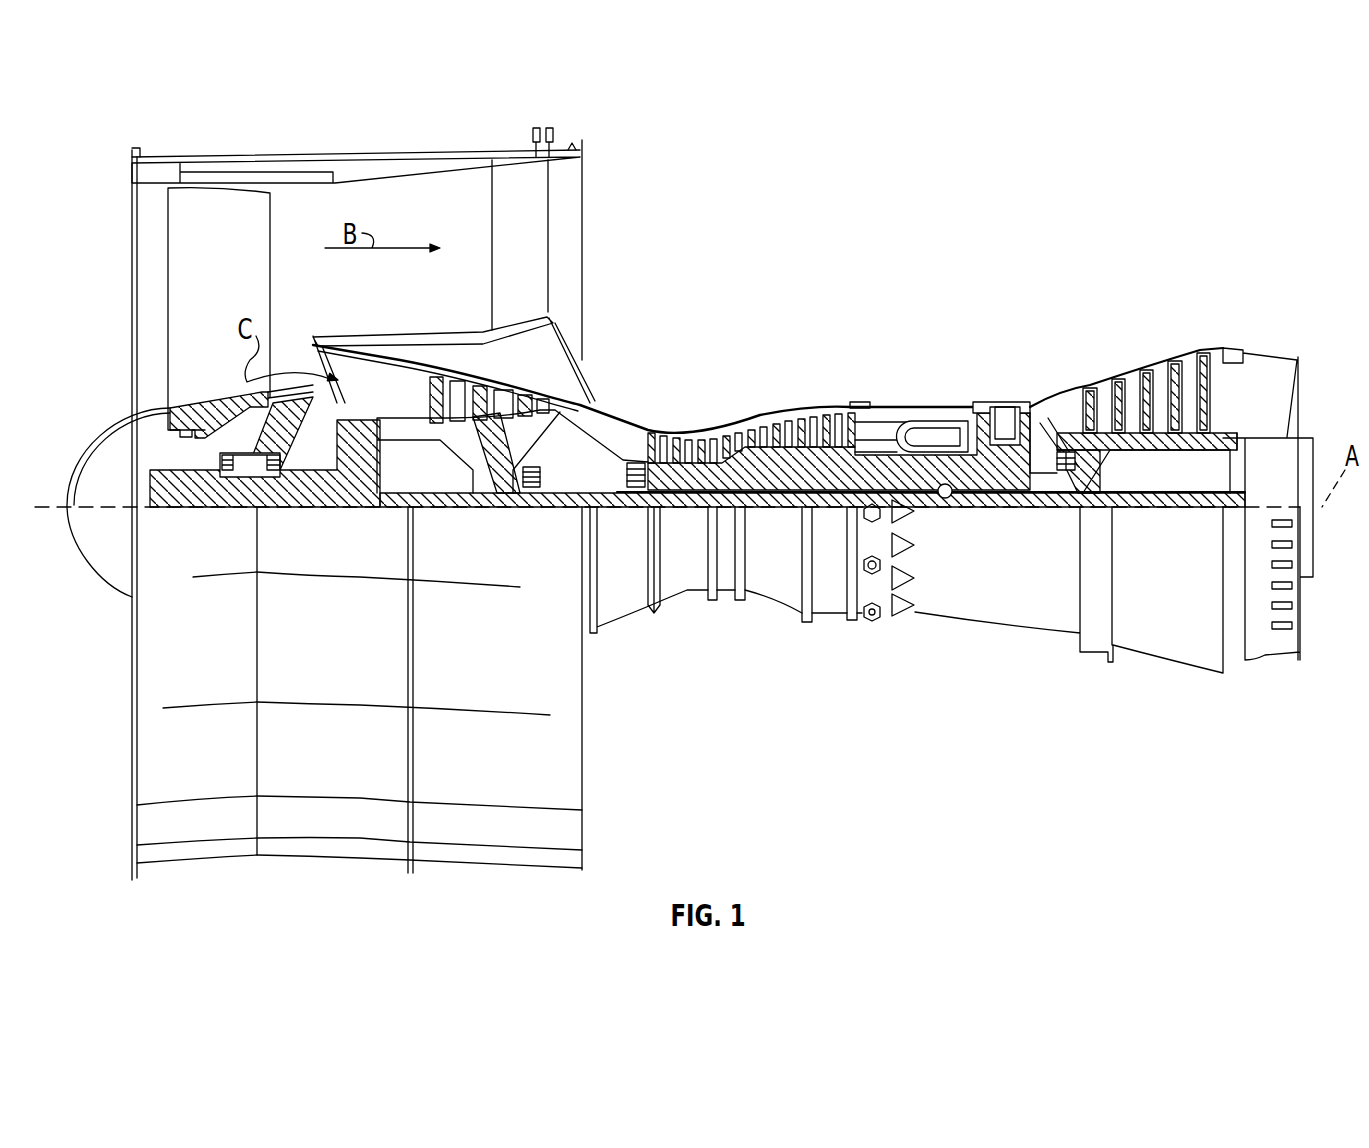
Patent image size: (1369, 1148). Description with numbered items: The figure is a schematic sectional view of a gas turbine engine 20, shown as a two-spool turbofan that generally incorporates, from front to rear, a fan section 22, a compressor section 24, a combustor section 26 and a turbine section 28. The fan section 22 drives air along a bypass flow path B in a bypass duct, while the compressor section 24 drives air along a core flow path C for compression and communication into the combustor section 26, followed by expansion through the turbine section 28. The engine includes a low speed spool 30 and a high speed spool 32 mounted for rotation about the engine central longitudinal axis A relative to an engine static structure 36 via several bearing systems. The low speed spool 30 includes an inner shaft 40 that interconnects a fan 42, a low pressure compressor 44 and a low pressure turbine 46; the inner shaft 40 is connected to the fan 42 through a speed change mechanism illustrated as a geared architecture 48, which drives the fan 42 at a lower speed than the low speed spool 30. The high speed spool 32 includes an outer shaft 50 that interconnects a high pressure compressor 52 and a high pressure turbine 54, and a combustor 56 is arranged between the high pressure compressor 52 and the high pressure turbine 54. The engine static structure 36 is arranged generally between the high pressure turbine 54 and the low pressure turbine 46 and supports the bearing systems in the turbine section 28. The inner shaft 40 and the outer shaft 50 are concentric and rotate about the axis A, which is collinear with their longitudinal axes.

The gas turbine engine 20 is at (1180, 165).
The fan section 22 is at (235, 148).
The compressor section 24 is at (752, 317).
The combustor section 26 is at (940, 298).
The turbine section 28 is at (1086, 295).
The low speed spool 30 is at (792, 514).
The high speed spool 32 is at (837, 468).
The engine static structure 36 is at (829, 623).
The inner shaft 40 is at (608, 508).
The fan 42 is at (228, 297).
The low pressure compressor 44 is at (502, 387).
The low pressure turbine 46 is at (1160, 372).
The geared architecture 48 is at (367, 487).
The outer shaft 50 is at (951, 498).
The high pressure compressor 52 is at (743, 472).
The high pressure turbine 54 is at (1003, 407).
The combustor 56 is at (925, 430).